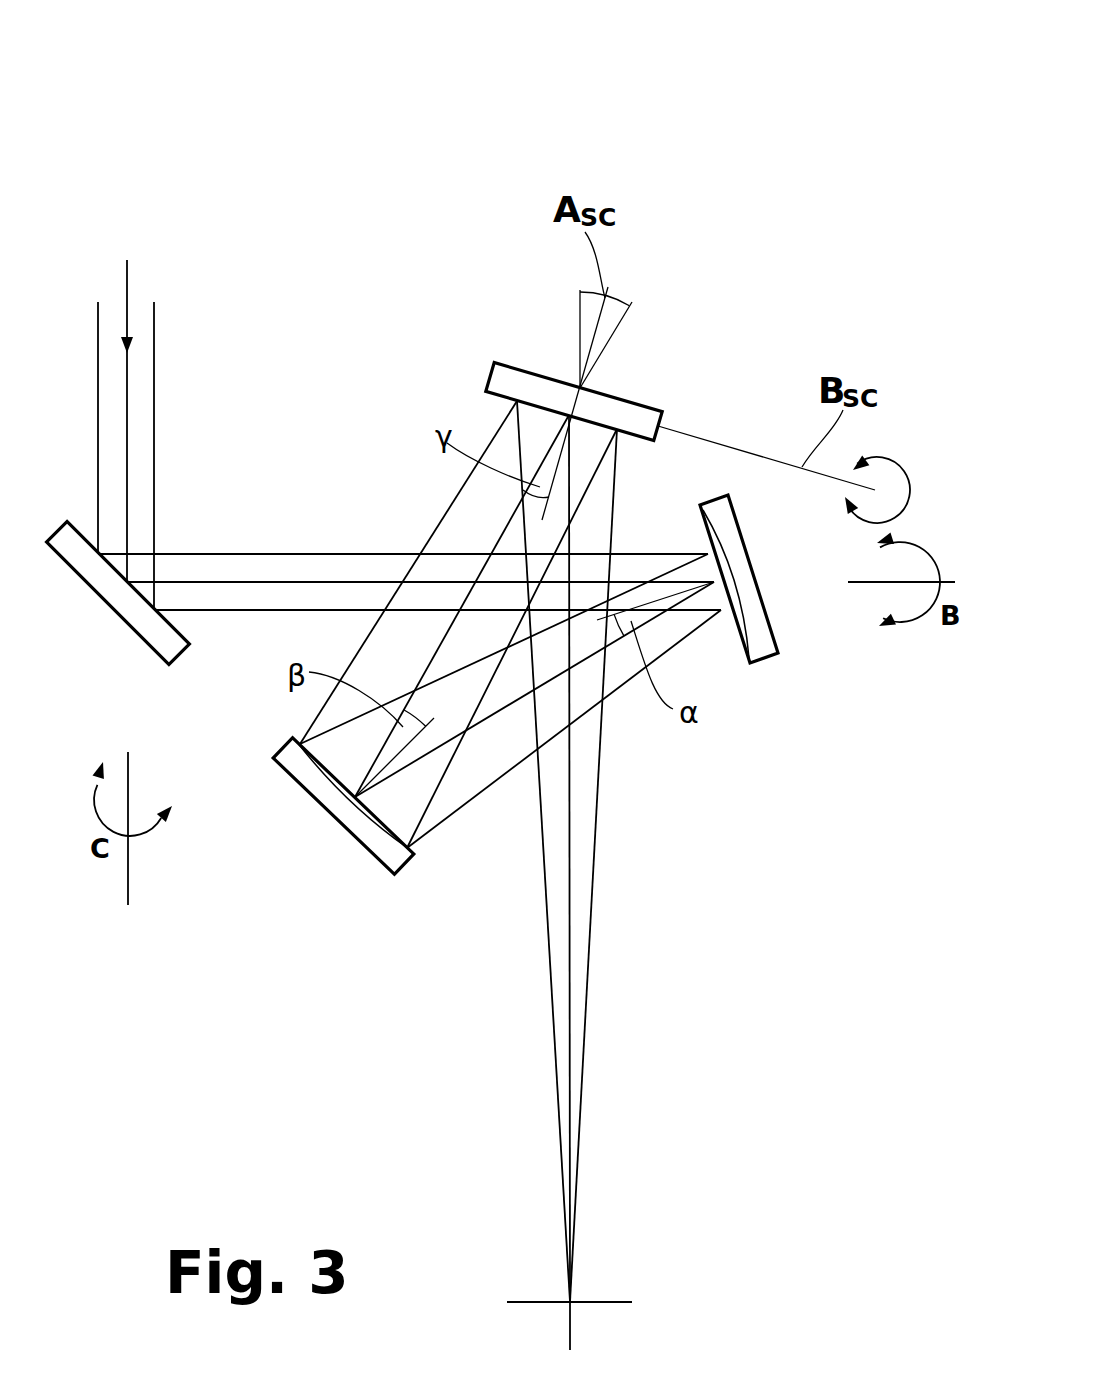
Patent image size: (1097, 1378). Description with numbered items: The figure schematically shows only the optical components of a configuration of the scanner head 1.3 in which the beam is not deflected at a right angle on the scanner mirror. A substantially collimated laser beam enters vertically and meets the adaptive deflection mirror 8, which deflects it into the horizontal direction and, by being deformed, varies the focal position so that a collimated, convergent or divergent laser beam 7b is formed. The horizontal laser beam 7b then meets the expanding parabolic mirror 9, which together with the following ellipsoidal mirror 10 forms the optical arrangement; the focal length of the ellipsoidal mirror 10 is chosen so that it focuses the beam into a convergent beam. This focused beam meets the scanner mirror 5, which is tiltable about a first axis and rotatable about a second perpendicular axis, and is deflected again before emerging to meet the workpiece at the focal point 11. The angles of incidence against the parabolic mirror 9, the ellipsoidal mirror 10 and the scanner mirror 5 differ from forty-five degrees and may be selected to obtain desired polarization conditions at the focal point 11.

The scanner head 1.3 is at (722, 151).
The scanner mirror 5 is at (618, 413).
The laser beam 7b is at (261, 581).
The adaptive deflection mirror 8 is at (135, 608).
The parabolic mirror 9 is at (752, 613).
The ellipsoidal mirror 10 is at (368, 842).
The focal point 11 is at (572, 1301).